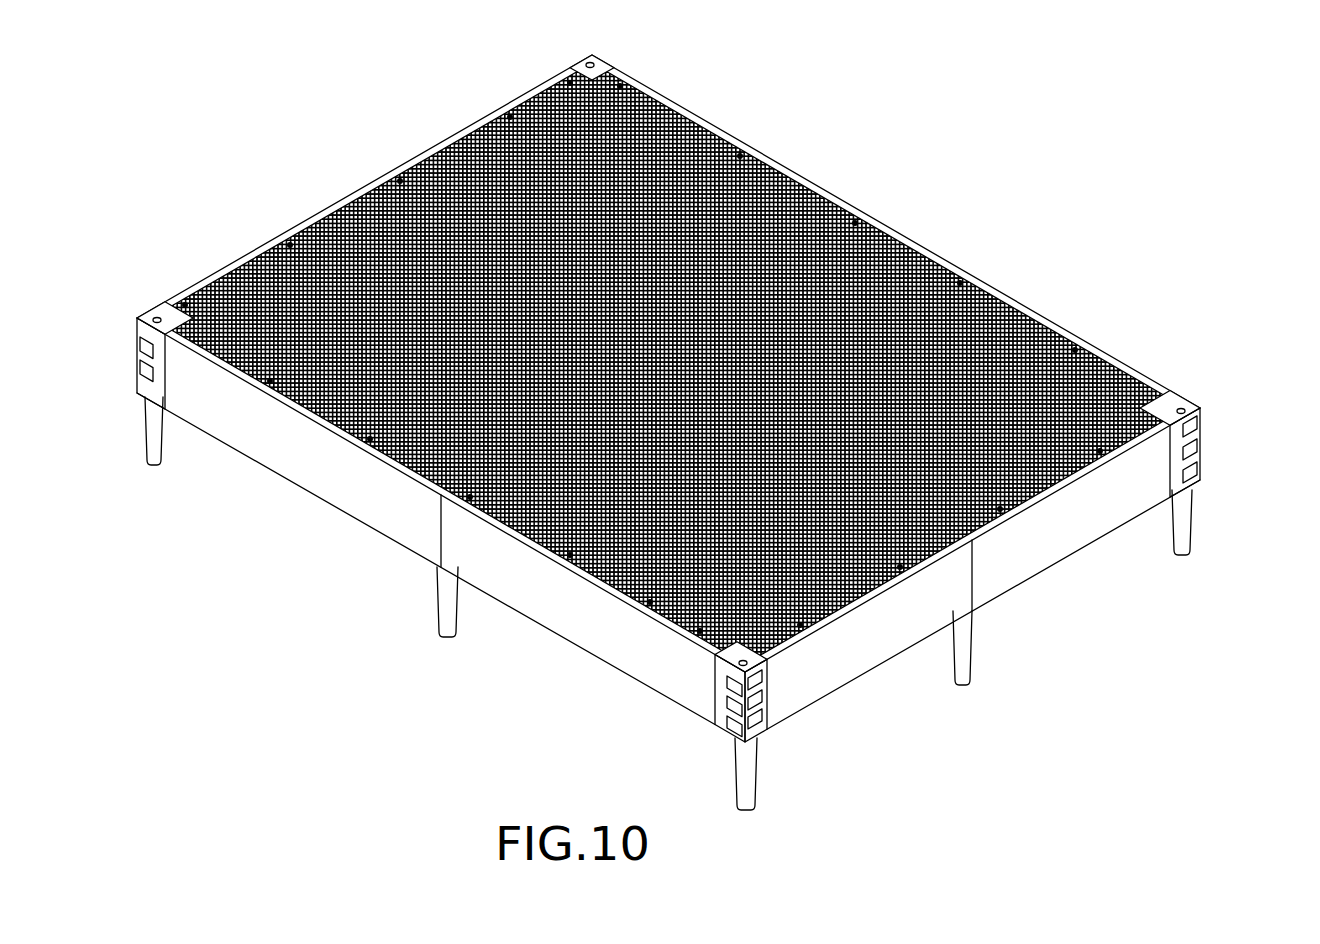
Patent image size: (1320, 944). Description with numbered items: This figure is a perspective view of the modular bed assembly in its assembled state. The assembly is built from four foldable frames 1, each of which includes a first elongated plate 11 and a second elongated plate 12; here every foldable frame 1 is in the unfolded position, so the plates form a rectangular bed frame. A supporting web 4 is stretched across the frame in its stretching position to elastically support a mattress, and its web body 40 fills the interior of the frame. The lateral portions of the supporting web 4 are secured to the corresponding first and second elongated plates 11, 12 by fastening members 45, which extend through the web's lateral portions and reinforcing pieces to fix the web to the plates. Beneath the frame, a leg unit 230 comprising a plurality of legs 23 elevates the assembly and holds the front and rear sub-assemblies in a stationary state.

The foldable frame 1 is at (575, 55).
The supporting web 4 is at (815, 176).
The web body 40 is at (838, 265).
The fastening member 45 is at (990, 297).
The first elongated plate 11 is at (318, 476).
The second elongated plate 12 is at (885, 650).
The leg 23 is at (150, 437).
The leg unit 230 is at (1221, 484).